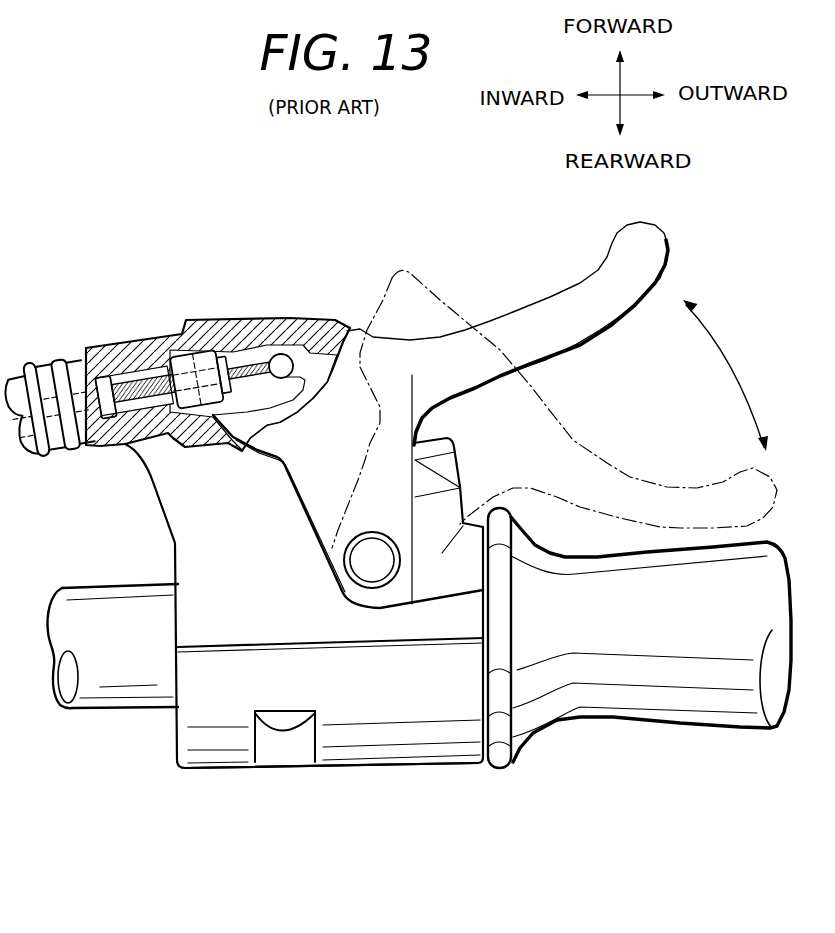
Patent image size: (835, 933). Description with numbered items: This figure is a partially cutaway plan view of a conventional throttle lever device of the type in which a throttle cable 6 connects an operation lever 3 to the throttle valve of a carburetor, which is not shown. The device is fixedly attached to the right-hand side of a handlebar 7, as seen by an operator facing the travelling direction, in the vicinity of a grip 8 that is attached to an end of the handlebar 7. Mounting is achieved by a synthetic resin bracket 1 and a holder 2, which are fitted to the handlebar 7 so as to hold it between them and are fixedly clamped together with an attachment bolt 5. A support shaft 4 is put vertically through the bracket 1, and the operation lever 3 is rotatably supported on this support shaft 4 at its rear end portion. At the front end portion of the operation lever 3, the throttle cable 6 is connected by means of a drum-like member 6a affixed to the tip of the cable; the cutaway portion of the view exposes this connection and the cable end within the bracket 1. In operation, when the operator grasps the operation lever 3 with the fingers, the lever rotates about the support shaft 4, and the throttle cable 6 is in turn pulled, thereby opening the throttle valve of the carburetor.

The synthetic resin bracket 1 is at (233, 628).
The holder 2 is at (365, 710).
The operation lever 3 is at (448, 350).
The support shaft 4 is at (375, 572).
The attachment bolt 5 is at (298, 727).
The throttle cable 6 is at (143, 382).
The drum-like member 6a is at (282, 362).
The handlebar 7 is at (137, 660).
The grip 8 is at (620, 693).